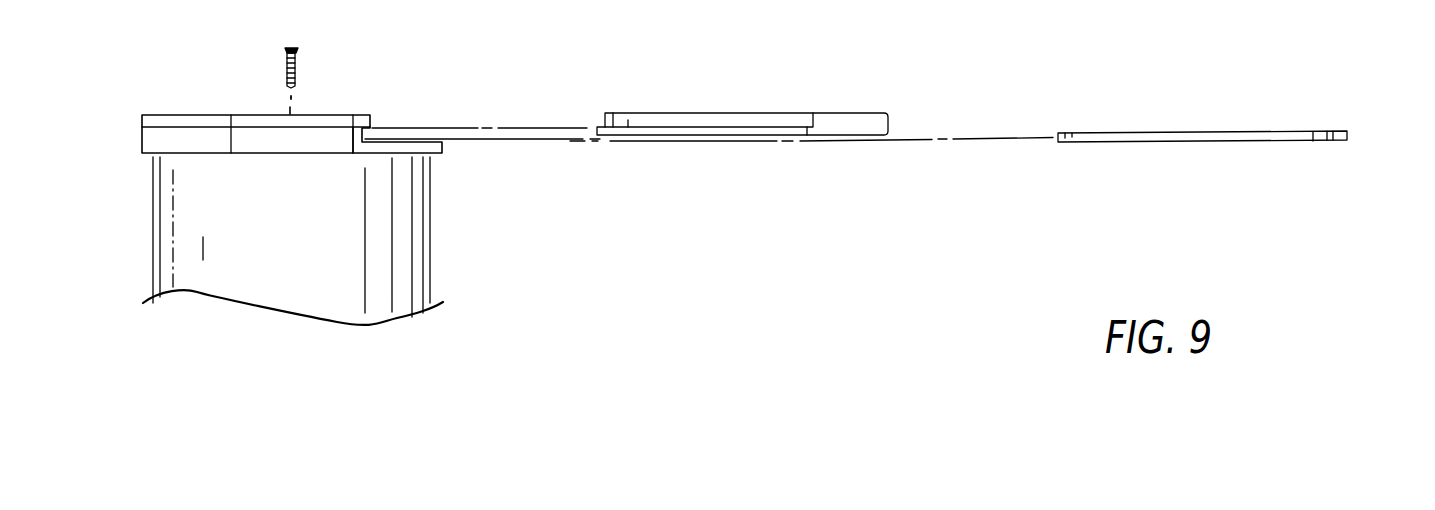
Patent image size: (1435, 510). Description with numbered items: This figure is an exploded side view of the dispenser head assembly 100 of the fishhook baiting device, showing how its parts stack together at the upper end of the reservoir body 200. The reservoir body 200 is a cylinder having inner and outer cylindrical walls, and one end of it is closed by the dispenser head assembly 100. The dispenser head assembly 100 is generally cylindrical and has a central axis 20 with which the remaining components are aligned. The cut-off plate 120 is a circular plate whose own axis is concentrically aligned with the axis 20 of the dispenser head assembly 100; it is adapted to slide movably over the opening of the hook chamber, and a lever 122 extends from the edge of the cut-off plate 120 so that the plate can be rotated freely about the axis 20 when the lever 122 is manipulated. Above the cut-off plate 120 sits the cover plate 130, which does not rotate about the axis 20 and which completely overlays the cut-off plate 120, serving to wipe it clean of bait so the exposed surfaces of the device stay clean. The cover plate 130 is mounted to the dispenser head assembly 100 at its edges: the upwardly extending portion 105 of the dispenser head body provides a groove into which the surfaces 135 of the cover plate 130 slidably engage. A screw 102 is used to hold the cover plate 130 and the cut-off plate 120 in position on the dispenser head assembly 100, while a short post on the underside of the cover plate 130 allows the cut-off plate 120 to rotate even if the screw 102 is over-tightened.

The axis 20 is at (288, 104).
The dispenser head assembly 100 is at (165, 118).
The screw 102 is at (298, 68).
The upwardly extending portion 105 is at (165, 137).
The cut-off plate 120 is at (1170, 137).
The lever 122 is at (1334, 131).
The cover plate 130 is at (777, 100).
The surfaces 135 is at (720, 132).
The reservoir body 200 is at (432, 198).